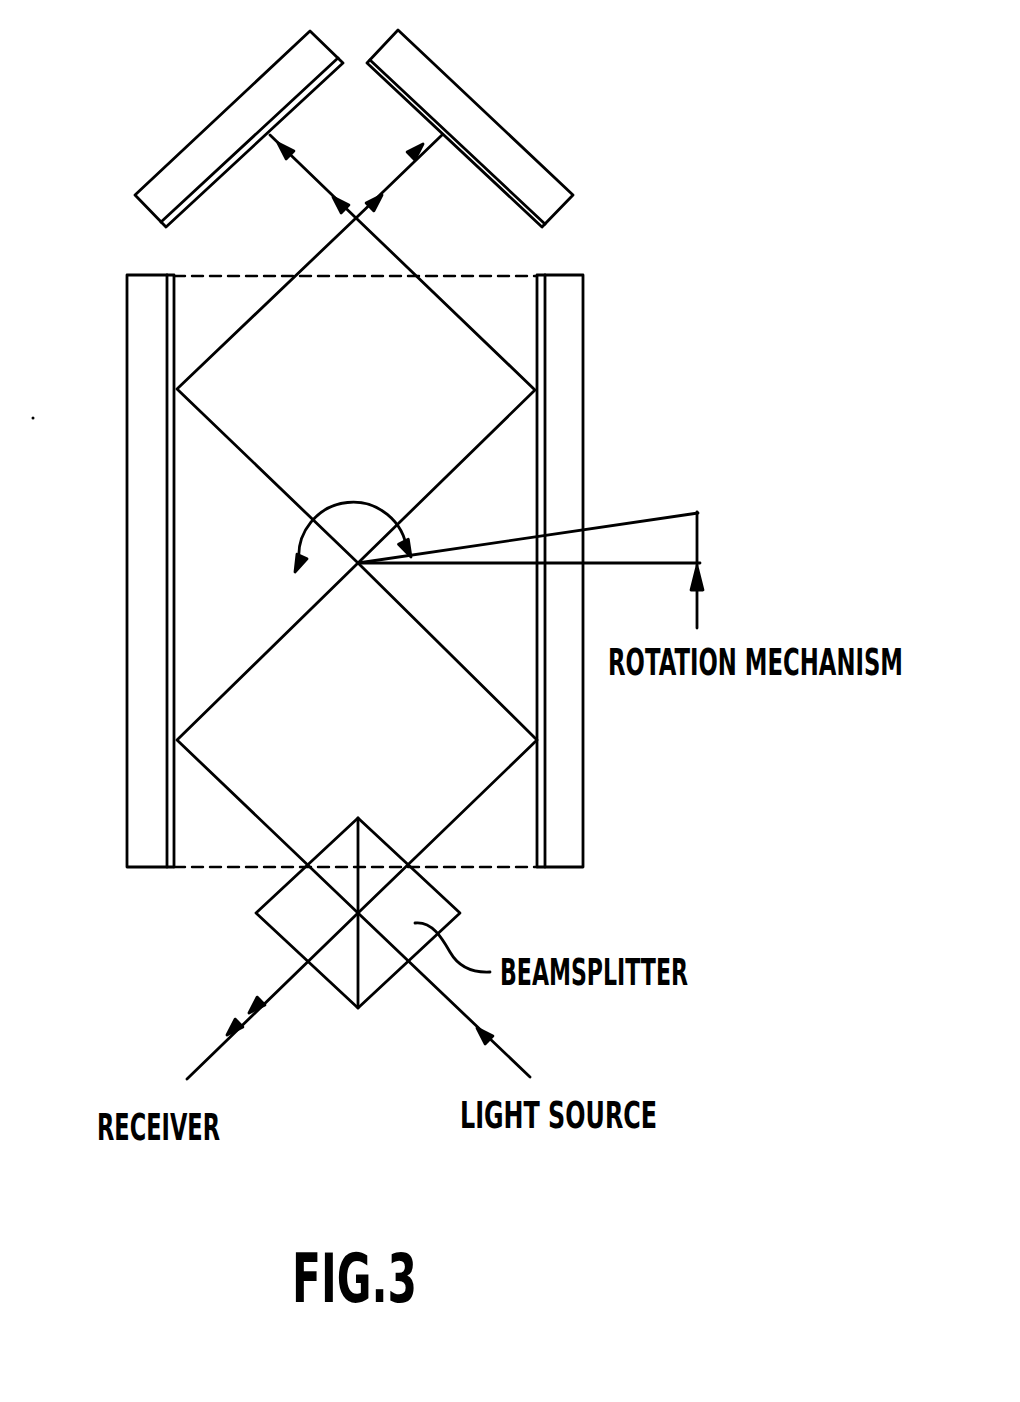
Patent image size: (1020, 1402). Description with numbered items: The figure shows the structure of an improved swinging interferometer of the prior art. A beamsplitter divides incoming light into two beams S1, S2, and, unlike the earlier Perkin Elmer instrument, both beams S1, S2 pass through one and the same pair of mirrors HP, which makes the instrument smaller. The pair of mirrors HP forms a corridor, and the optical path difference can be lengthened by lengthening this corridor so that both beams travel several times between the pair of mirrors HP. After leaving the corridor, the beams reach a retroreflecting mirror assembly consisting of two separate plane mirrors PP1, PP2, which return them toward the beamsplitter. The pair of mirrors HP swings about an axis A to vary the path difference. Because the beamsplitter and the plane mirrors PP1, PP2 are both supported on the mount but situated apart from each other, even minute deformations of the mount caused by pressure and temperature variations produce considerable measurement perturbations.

The plane mirror PP1 is at (238, 163).
The plane mirror PP2 is at (470, 163).
The beam S1 is at (243, 805).
The beam S2 is at (482, 792).
The pair of mirrors HP is at (218, 903).
The rotation axis / rotation angle A is at (364, 578).